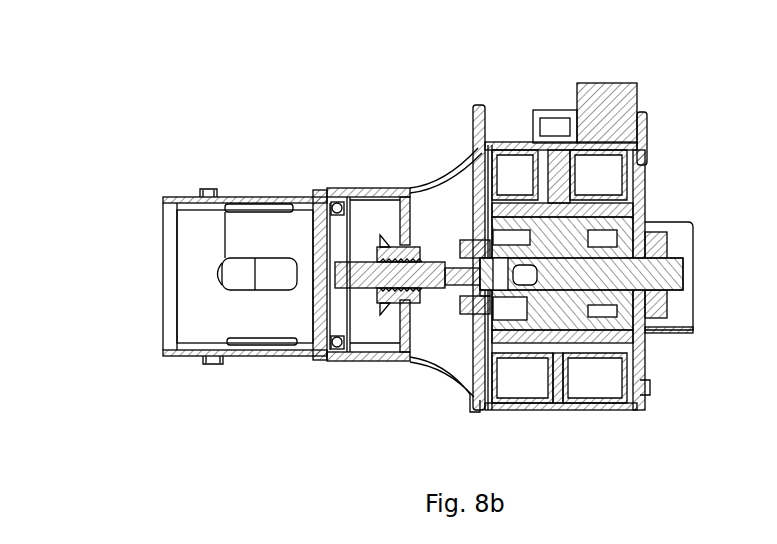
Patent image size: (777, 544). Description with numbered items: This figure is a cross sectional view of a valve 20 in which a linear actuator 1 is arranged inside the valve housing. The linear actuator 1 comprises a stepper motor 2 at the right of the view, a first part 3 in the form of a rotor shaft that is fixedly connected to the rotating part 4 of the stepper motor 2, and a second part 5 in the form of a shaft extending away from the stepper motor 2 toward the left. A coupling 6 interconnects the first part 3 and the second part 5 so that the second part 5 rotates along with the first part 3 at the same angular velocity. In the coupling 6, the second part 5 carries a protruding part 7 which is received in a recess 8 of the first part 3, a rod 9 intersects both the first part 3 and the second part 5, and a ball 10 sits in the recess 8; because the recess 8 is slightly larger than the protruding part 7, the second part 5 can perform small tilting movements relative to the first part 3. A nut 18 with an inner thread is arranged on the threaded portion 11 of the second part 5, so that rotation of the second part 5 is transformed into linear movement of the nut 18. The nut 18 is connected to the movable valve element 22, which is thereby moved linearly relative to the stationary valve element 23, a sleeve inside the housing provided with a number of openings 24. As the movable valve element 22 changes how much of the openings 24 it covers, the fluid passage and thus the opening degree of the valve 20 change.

The linear actuator 1 is at (635, 407).
The stepper motor 2 is at (598, 383).
The first part 3 is at (598, 280).
The rotating part 4 is at (557, 320).
The second part 5 is at (445, 278).
The coupling 6 is at (478, 247).
The protruding part 7 is at (465, 267).
The recess 8 is at (503, 287).
The rod 9 is at (490, 255).
The ball 10 is at (525, 275).
The threaded portion 11 is at (398, 256).
The nut 18 is at (398, 292).
The valve 20 is at (157, 116).
The movable valve element 22 is at (330, 196).
The stationary valve element 23 is at (187, 345).
The openings 24 is at (234, 205).